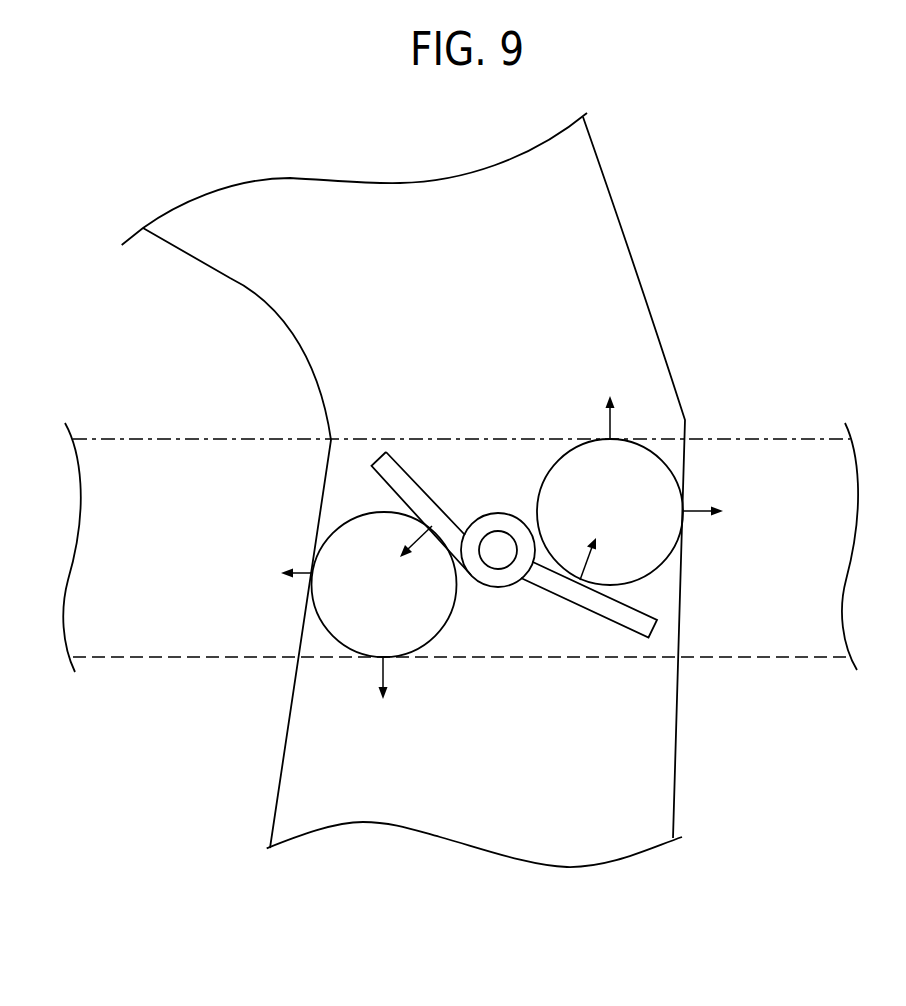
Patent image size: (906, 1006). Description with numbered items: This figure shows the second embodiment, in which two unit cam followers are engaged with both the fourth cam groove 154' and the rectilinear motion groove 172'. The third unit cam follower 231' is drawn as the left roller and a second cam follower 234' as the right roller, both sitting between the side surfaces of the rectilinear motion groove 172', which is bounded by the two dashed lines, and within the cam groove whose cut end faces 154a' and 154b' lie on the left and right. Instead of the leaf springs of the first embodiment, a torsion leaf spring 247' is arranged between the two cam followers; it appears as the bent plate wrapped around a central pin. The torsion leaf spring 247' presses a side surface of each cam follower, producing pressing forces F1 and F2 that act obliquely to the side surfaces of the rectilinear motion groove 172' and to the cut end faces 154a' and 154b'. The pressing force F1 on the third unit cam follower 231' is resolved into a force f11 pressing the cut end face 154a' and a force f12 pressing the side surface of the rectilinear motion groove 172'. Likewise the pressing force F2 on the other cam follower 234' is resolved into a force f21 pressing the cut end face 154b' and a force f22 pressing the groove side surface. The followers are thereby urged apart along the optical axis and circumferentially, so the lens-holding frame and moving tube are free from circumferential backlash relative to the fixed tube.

The fourth cam groove 154' is at (460, 548).
The cam's cut end face 154a' is at (250, 582).
The cam's cut end face 154b' is at (633, 527).
The third unit cam follower 231' is at (384, 514).
The second roller 234' is at (652, 458).
The torsion leaf spring 247' is at (506, 470).
The rectilinear motion groove 172' is at (585, 590).
The force f11 is at (271, 573).
The force f12 is at (382, 693).
The force f21 is at (724, 510).
The force f22 is at (610, 399).
The pressing force F1 is at (419, 558).
The pressing force F2 is at (607, 559).